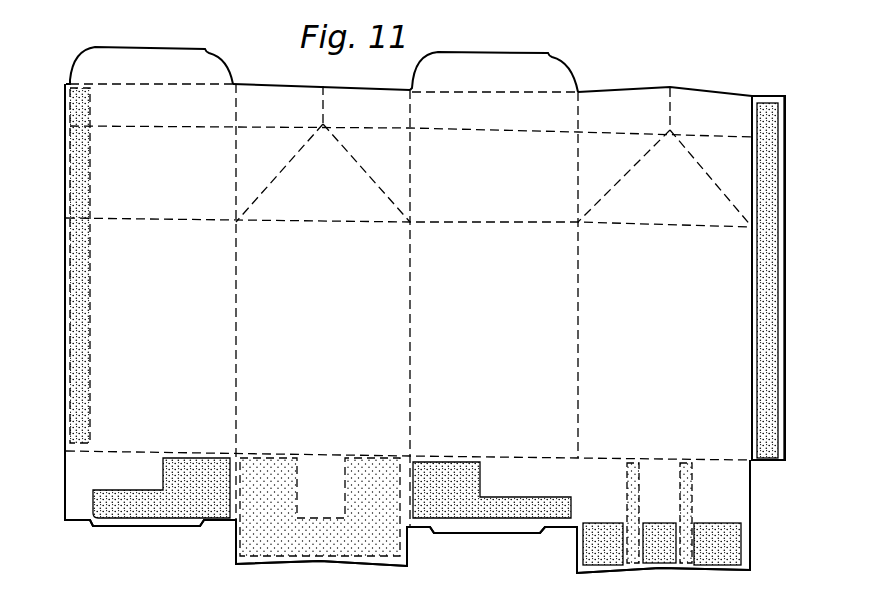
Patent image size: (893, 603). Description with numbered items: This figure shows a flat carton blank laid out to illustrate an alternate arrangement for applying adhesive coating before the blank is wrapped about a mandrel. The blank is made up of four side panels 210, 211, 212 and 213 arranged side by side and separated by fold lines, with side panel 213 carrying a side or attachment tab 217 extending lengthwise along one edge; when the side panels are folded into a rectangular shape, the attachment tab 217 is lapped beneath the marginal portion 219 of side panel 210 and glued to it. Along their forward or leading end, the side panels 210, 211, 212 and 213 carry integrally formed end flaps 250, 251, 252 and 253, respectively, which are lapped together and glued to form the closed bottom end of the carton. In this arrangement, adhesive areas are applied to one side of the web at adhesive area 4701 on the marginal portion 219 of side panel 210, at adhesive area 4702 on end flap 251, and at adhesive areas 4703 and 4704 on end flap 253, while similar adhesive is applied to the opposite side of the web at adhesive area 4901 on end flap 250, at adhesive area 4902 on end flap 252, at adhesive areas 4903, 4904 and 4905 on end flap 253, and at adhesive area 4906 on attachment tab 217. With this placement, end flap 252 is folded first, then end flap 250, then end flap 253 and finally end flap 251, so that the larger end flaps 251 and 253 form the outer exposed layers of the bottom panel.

The side panel 210 is at (171, 295).
The side panel 211 is at (343, 306).
The side panel 212 is at (520, 308).
The side panel 213 is at (680, 321).
The attachment tab 217 is at (768, 463).
The marginal portion 219 is at (64, 362).
The end flap 250 is at (72, 514).
The end flap 251 is at (318, 463).
The end flap 252 is at (522, 468).
The end flap 253 is at (710, 468).
The adhesive area 4701 is at (84, 327).
The adhesive area 4702 is at (356, 535).
The adhesive area 4703 is at (632, 468).
The adhesive area 4704 is at (688, 468).
The adhesive area 4901 is at (182, 507).
The adhesive area 4902 is at (490, 518).
The adhesive area 4903 is at (612, 563).
The adhesive area 4904 is at (663, 558).
The adhesive area 4905 is at (718, 563).
The adhesive area 4906 is at (767, 383).